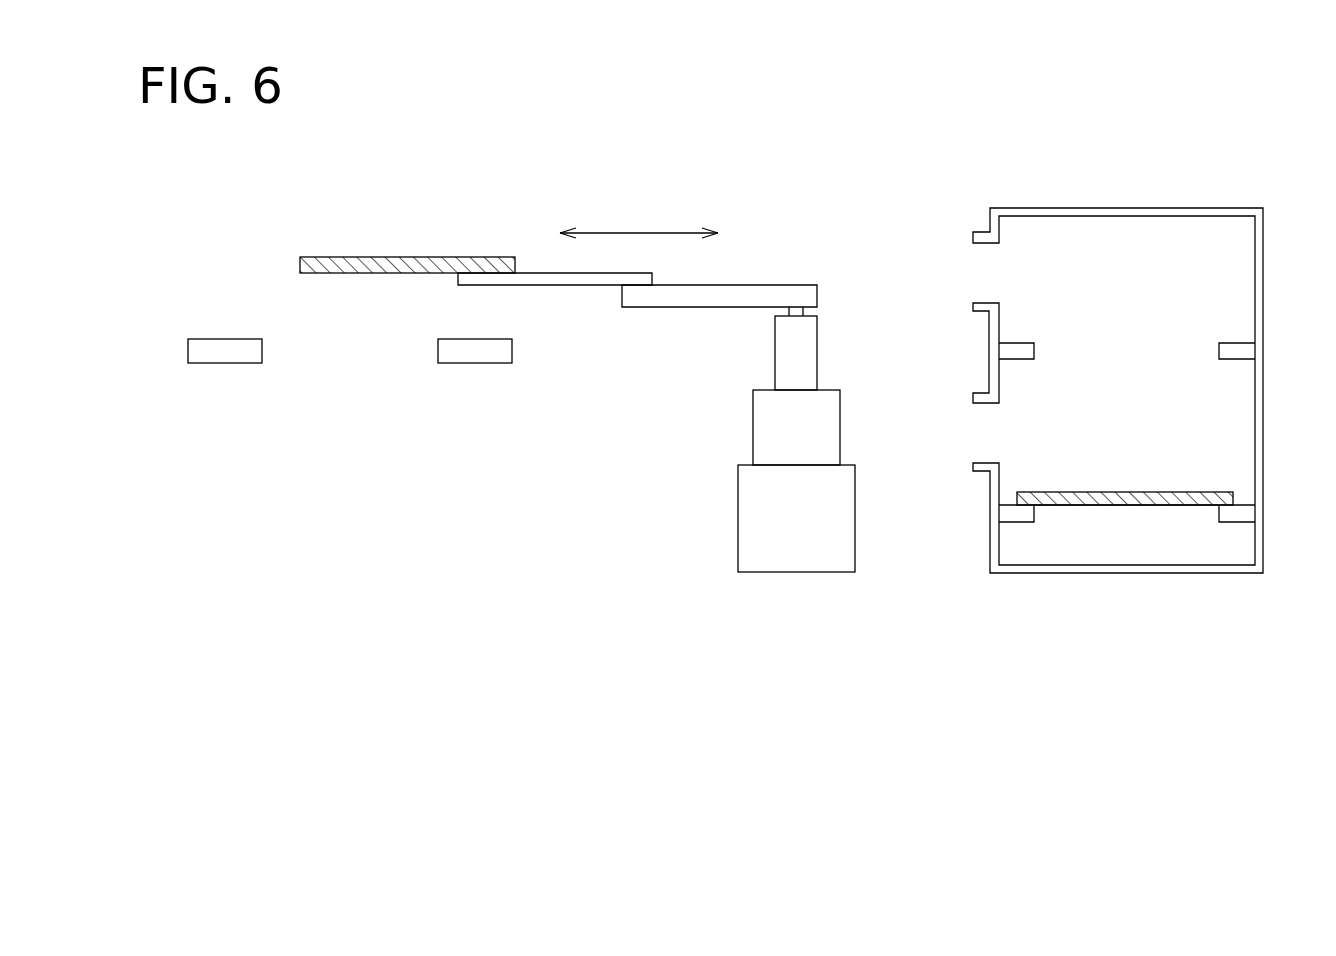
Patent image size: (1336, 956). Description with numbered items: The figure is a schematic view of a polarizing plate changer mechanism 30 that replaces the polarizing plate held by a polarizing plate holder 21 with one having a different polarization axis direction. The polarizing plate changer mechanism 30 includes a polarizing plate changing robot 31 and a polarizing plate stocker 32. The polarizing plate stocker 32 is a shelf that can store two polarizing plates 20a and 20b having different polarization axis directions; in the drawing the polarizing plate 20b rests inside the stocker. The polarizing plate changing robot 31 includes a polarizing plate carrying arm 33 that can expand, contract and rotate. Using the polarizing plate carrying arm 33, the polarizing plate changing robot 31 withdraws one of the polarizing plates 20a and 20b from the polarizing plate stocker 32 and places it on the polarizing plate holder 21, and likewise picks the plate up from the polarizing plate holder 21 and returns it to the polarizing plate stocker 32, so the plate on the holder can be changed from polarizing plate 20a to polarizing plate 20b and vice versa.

The polarizing plate 20a is at (363, 257).
The polarizing plate 20b is at (1158, 492).
The polarizing plate holder 21 is at (224, 363).
The polarizing plate changer mechanism 30 is at (663, 612).
The polarizing plate changing robot 31 is at (738, 520).
The polarizing plate stocker 32 is at (1052, 208).
The polarizing plate carrying arm 33 is at (583, 287).